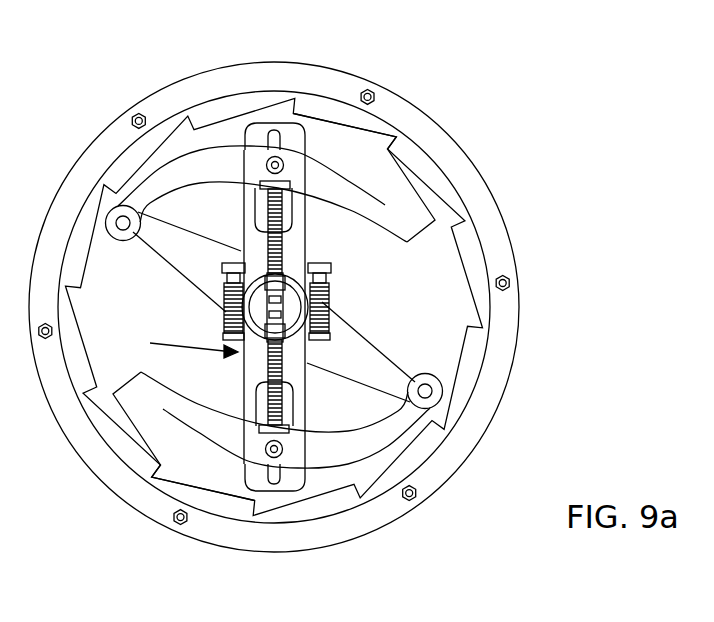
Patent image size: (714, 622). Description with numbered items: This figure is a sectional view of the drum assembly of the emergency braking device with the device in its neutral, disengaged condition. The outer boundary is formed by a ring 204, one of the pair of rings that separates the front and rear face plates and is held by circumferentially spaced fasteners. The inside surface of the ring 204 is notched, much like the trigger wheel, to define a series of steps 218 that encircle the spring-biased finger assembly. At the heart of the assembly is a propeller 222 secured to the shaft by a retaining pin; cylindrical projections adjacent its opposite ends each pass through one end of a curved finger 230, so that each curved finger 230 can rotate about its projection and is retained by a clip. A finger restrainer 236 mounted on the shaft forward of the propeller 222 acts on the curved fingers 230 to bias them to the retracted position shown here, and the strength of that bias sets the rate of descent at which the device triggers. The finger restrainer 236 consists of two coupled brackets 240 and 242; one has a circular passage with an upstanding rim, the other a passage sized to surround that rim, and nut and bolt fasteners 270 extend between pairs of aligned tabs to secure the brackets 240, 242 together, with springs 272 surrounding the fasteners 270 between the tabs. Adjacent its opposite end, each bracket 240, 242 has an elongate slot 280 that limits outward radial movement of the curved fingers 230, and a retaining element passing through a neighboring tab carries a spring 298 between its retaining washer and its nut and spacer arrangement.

The ring 204 is at (435, 173).
The steps 218 is at (477, 316).
The propeller 222 is at (393, 372).
The curved finger 230 is at (341, 178).
The finger restrainer 236 is at (169, 340).
The bracket 240 is at (250, 202).
The bracket 242 is at (250, 407).
The nut and bolt fasteners 270 is at (328, 278).
The springs 272 is at (312, 306).
The elongate slot 280 is at (277, 158).
The spring 298 is at (270, 398).